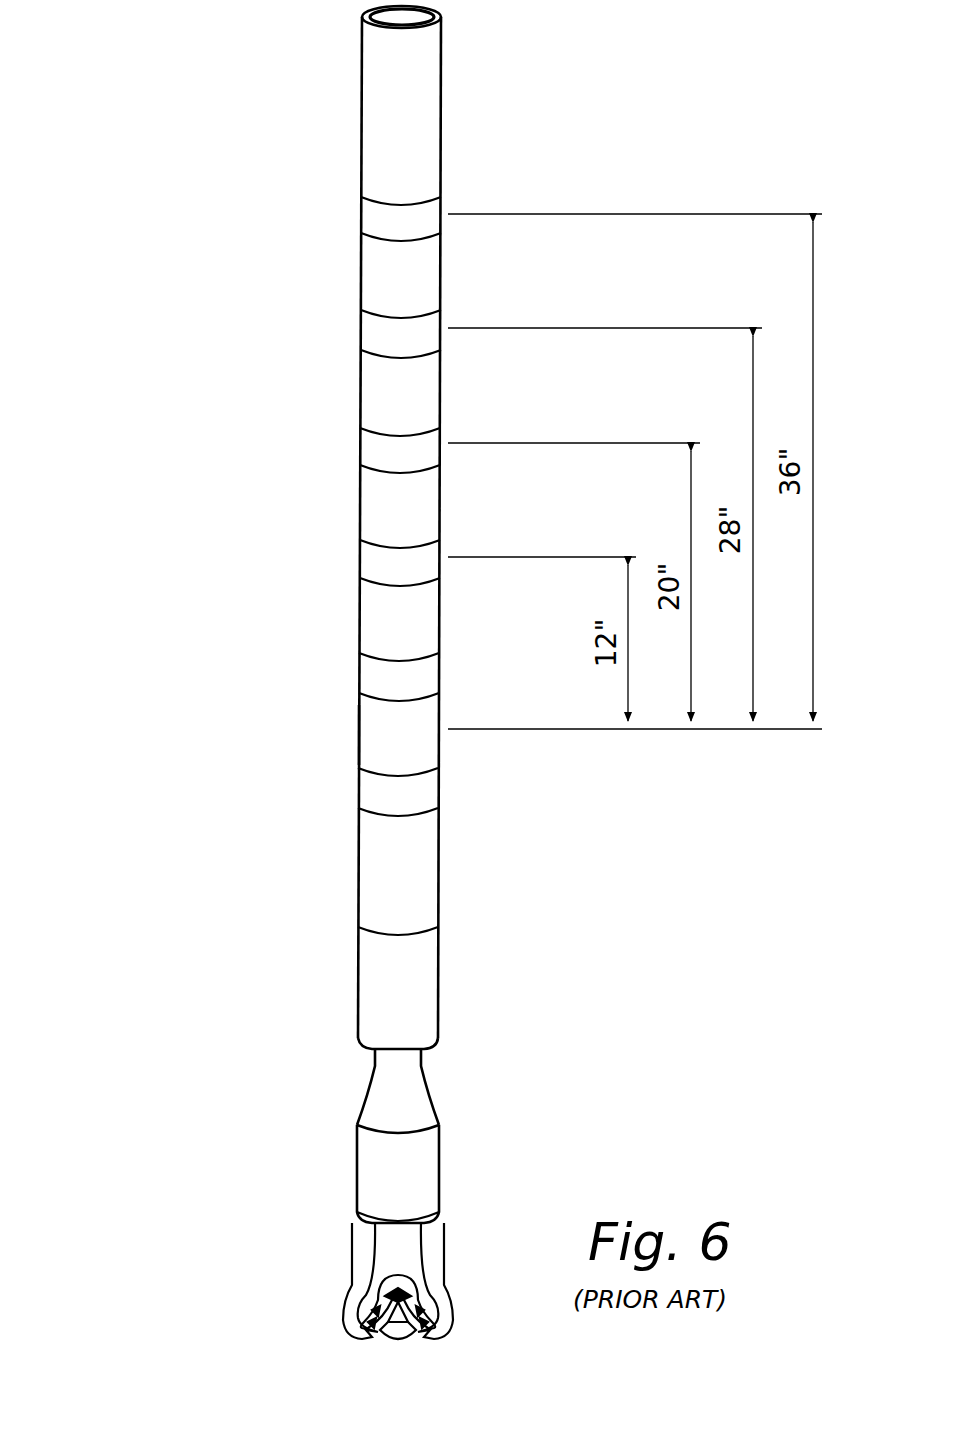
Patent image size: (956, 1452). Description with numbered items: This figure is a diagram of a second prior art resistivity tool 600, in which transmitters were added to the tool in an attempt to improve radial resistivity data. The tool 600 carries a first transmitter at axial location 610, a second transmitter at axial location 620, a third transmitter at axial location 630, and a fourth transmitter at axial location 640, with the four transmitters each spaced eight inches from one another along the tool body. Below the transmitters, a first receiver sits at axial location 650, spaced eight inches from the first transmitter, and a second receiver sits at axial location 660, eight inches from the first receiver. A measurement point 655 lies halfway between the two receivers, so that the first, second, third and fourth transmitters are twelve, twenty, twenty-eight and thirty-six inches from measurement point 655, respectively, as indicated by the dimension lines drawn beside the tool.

The resistivity tool 600 is at (172, 110).
The axial location of first transmitter 610 is at (360, 547).
The axial location of second transmitter 620 is at (361, 442).
The axial location of third transmitter 630 is at (361, 333).
The axial location of fourth transmitter 640 is at (361, 209).
The axial location of first receiver 650 is at (359, 670).
The measurement point 655 is at (359, 729).
The axial location of second receiver 660 is at (359, 780).